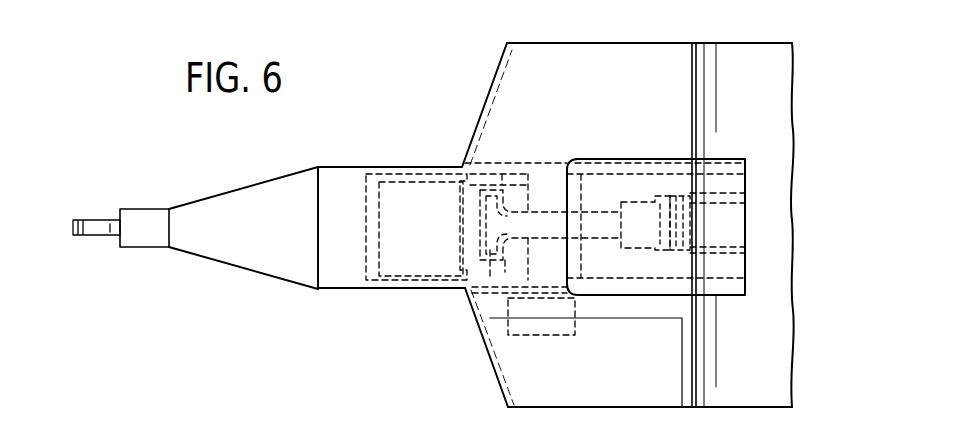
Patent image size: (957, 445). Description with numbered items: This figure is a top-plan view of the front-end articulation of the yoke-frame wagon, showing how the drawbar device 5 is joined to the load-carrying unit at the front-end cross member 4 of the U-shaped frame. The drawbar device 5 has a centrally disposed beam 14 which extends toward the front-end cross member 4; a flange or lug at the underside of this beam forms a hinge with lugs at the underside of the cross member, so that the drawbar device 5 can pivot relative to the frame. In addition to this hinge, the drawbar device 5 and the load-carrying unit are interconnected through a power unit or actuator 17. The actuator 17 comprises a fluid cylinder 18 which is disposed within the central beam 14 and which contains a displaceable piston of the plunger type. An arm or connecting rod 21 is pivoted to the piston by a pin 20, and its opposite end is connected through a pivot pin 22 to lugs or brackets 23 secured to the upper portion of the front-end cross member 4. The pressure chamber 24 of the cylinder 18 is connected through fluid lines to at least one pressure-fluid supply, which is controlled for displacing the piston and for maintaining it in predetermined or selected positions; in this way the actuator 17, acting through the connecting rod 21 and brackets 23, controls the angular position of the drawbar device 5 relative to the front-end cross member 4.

The front-end cross member 4 is at (741, 78).
The drawbar device 5 is at (450, 159).
The centrally disposed beam 14 is at (349, 167).
The power unit or actuator 17 is at (439, 287).
The fluid cylinder 18 is at (370, 284).
The pin 20 is at (502, 166).
The arm or connecting rod 21 is at (594, 215).
The pivot pin 22 is at (673, 250).
The lugs or brackets 23 is at (745, 188).
The pressure chamber 24 is at (425, 260).